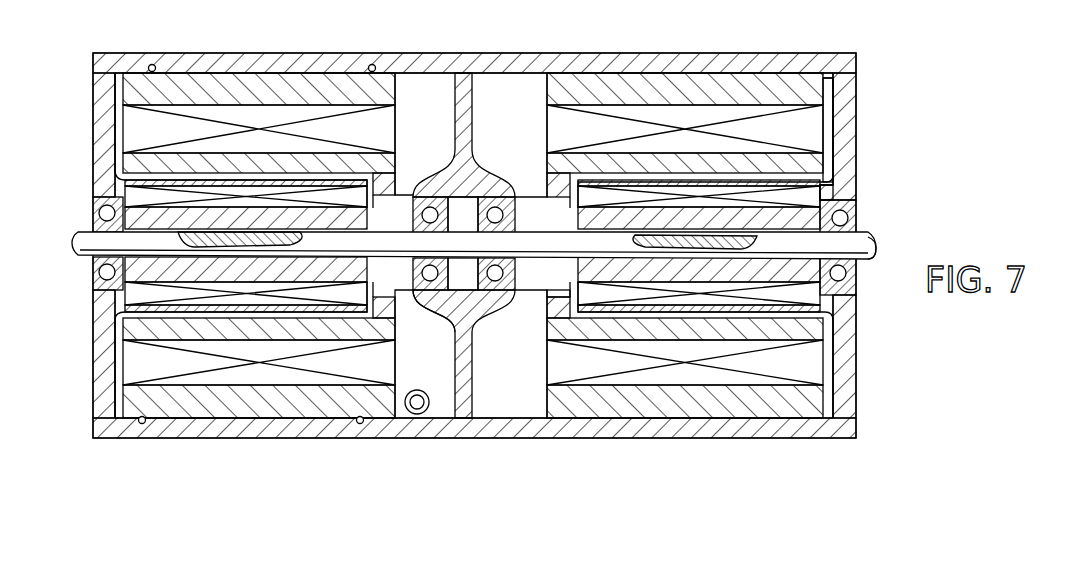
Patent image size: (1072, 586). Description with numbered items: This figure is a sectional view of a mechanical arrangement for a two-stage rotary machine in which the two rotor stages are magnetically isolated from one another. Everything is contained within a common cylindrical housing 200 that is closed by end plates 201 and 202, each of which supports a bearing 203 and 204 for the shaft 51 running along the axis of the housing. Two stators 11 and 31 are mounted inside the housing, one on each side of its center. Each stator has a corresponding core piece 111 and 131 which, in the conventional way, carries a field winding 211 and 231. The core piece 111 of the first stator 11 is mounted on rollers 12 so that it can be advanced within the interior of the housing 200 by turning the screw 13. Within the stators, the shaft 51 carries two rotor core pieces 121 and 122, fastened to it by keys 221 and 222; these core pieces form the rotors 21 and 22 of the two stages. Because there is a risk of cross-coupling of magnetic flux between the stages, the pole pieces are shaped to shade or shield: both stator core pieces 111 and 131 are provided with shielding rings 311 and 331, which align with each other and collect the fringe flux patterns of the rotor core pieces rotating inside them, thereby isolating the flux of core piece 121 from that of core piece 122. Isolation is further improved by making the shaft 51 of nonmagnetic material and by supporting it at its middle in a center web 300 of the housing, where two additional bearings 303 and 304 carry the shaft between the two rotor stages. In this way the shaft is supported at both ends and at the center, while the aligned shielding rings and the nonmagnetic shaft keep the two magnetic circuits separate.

The common cylindrical housing 200 is at (521, 63).
The end plate 201 is at (92, 343).
The end plate 202 is at (848, 104).
The bearing 203 is at (93, 265).
The bearing 204 is at (845, 286).
The stator 11 is at (404, 87).
The rollers 12 is at (152, 64).
The screw 13 is at (440, 372).
The rotor 21 is at (108, 280).
The rotor 22 is at (832, 197).
The stator 31 is at (829, 92).
The shaft 51 is at (873, 243).
The core piece 111 is at (255, 80).
The field winding 211 is at (300, 112).
The core piece 131 is at (551, 95).
The field winding 231 is at (578, 128).
The shielding ring 311 is at (388, 187).
The shielding ring 331 is at (553, 175).
The core piece 121 is at (95, 218).
The core piece 122 is at (846, 268).
The key 221 is at (388, 199).
The key 222 is at (640, 226).
The center web 300 is at (468, 343).
The bearing 303 is at (416, 292).
The bearing 304 is at (508, 284).